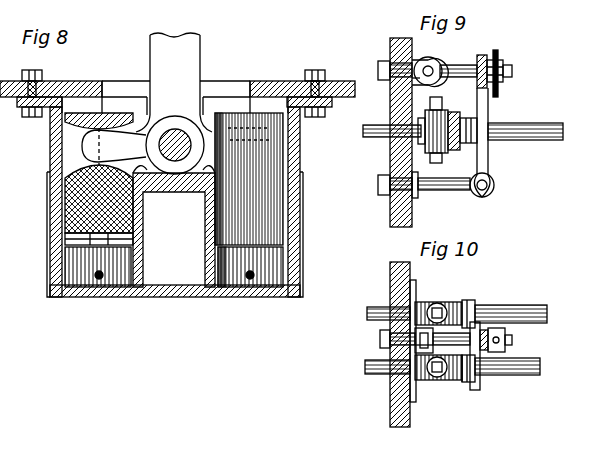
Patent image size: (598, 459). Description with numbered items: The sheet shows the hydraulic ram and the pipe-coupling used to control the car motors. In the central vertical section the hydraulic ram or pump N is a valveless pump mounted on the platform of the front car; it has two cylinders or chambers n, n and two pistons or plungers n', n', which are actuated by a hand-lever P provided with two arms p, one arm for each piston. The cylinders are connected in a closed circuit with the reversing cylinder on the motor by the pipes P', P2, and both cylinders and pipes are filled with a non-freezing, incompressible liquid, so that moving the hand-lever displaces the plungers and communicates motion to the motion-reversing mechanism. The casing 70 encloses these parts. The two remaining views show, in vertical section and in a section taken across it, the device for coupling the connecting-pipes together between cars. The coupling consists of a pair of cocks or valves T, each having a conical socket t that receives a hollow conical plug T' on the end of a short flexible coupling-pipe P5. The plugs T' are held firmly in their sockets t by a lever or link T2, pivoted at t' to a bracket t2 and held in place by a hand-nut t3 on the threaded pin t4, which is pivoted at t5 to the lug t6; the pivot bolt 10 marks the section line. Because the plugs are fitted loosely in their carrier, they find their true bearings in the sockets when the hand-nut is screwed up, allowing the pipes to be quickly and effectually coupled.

In FIG. 8, the hand-lever P is at (174, 103).
In FIG. 8, the arm p is at (114, 147).
In FIG. 8, the pump casing 70 is at (301, 147).
In FIG. 8, the piston or plunger n' is at (174, 179).
In FIG. 8, the cylinder or chamber n is at (174, 267).
In FIG. 8, the hydraulic ram or pump N is at (174, 230).
In FIG. 8, the pipe P' is at (87, 301).
In FIG. 10, the pipe P' is at (368, 313).
In FIG. 8, the pipe P2 is at (249, 279).
In FIG. 9, the pipe P2 is at (380, 139).
In FIG. 10, the pipe P2 is at (365, 364).
In FIG. 9, the flexible coupling-pipe P5 is at (552, 120).
In FIG. 10, the flexible coupling-pipe P5 is at (542, 308).
In FIG. 9, the pivot bolt 10 is at (378, 70).
In FIG. 9, the pivot t5 is at (430, 58).
In FIG. 10, the pivot t5 is at (420, 352).
In FIG. 9, the threaded pin t4 is at (459, 63).
In FIG. 10, the threaded pin t4 is at (512, 338).
In FIG. 9, the hand-nut t3 is at (505, 58).
In FIG. 10, the hand-nut t3 is at (508, 342).
In FIG. 9, the lug t6 is at (418, 80).
In FIG. 10, the lug t6 is at (415, 348).
In FIG. 9, the bracket t2 is at (466, 190).
In FIG. 9, the pivot t' is at (494, 185).
In FIG. 9, the conical socket t is at (453, 142).
In FIG. 10, the conical socket t is at (455, 384).
In FIG. 9, the cock or valve T is at (440, 121).
In FIG. 10, the cock or valve T is at (438, 343).
In FIG. 9, the conical plug T' is at (488, 139).
In FIG. 10, the conical plug T' is at (484, 337).
In FIG. 9, the lever or link T2 is at (489, 115).
In FIG. 10, the lever or link T2 is at (481, 333).